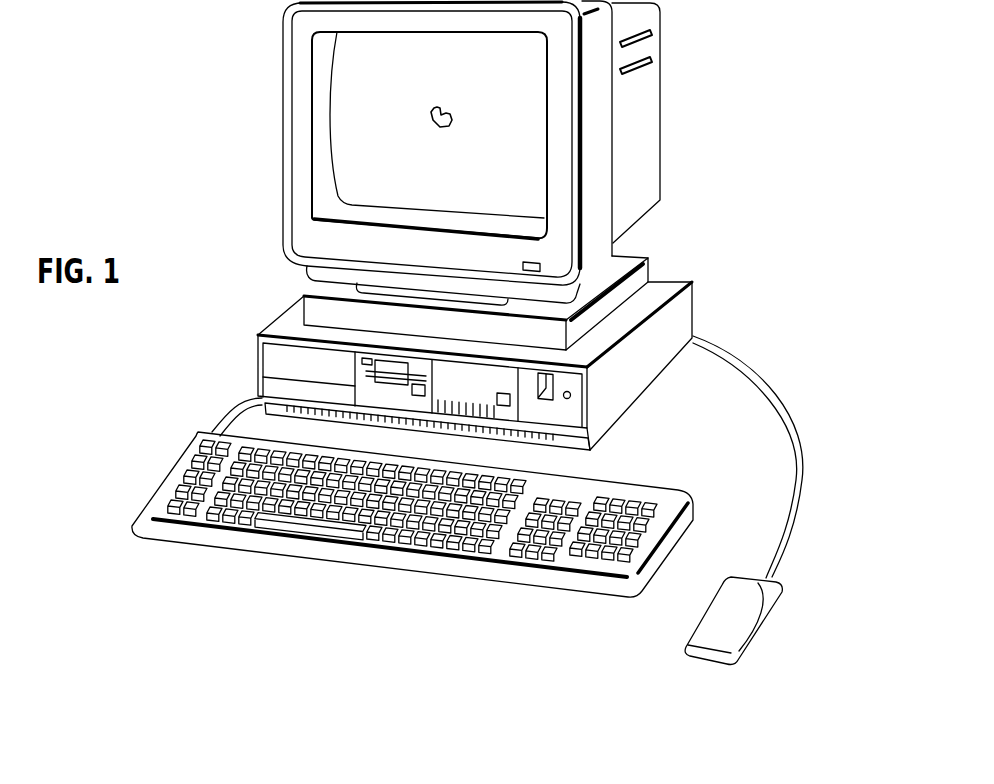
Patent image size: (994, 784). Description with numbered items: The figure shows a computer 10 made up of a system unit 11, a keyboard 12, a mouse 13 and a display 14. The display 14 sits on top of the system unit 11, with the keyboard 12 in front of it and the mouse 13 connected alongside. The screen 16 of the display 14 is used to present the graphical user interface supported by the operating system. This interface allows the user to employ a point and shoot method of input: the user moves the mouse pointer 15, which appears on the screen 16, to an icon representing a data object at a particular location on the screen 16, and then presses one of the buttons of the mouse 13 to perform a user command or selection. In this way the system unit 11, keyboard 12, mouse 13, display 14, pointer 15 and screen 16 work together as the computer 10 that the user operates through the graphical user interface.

The computer 10 is at (224, 203).
The system unit 11 is at (257, 353).
The keyboard 12 is at (157, 538).
The mouse 13 is at (774, 612).
The display 14 is at (282, 125).
The mouse pointer 15 is at (437, 107).
The screen 16 is at (398, 158).